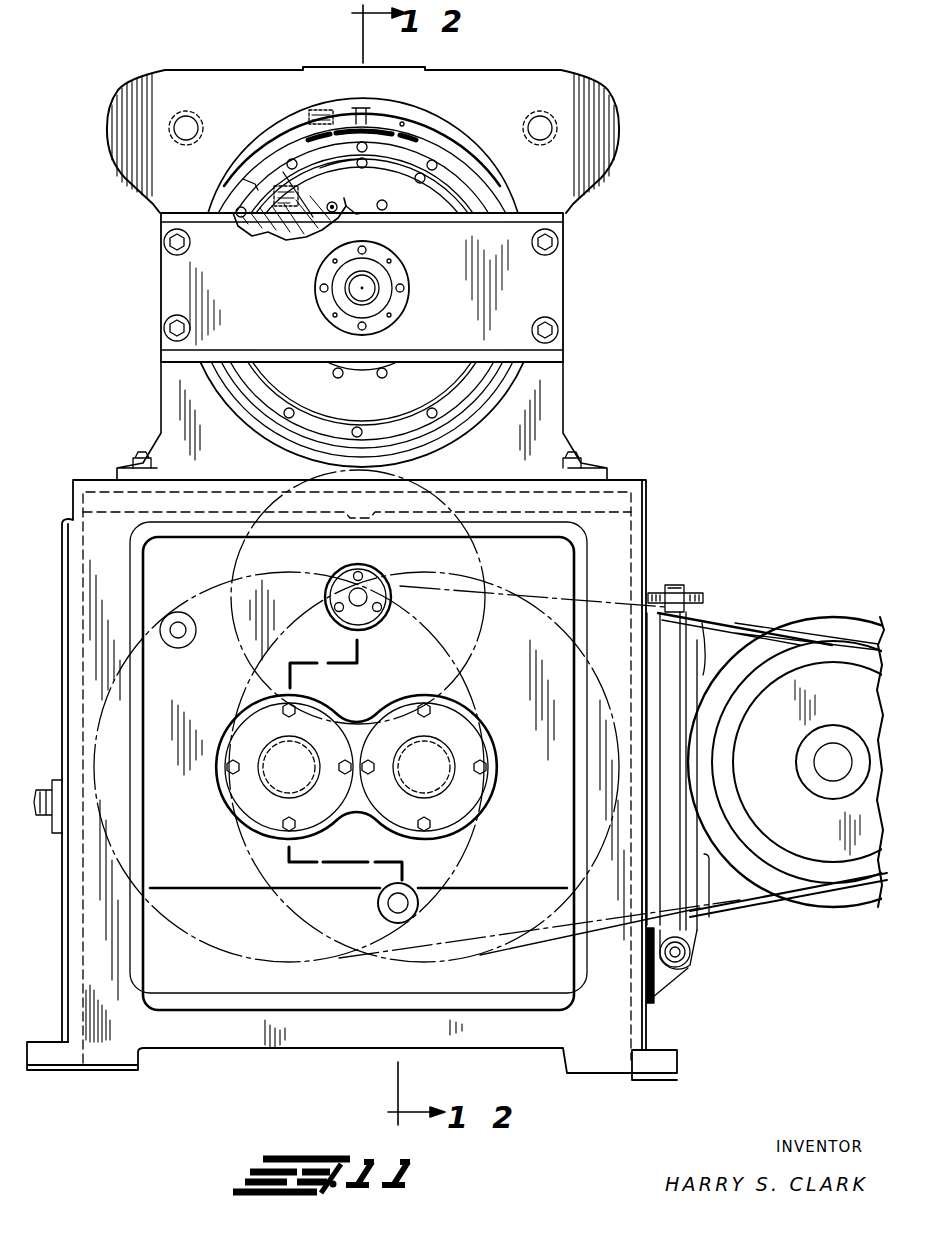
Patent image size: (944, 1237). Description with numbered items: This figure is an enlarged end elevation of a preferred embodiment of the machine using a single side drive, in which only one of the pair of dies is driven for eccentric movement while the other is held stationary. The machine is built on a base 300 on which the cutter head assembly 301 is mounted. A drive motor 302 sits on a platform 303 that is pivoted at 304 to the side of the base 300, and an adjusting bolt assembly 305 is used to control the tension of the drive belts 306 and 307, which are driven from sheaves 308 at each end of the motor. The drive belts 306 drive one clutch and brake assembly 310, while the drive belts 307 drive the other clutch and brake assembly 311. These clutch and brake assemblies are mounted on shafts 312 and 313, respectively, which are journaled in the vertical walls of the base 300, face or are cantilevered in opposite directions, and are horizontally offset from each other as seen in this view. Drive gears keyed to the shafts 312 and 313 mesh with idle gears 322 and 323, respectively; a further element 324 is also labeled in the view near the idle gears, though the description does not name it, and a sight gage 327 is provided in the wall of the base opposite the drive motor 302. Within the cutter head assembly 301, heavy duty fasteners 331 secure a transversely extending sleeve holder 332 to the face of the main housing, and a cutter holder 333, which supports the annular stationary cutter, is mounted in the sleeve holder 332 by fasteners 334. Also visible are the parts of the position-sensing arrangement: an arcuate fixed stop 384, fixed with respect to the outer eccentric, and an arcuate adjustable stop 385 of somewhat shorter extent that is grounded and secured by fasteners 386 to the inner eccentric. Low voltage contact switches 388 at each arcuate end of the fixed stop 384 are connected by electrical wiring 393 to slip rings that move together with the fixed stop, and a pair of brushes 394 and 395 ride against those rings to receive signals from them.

The base 300 is at (660, 518).
The cutter head assembly 301 is at (575, 266).
The drive motor 302 is at (843, 900).
The platform 303 is at (677, 808).
The pivot 304 is at (680, 966).
The adjusting bolt assembly 305 is at (690, 592).
The drive belts 306 is at (560, 586).
The drive belts 307 is at (497, 600).
The sheaves 308 is at (807, 853).
The clutch and brake assembly 310 is at (232, 962).
The clutch and brake assembly 311 is at (438, 963).
The shaft 312 is at (443, 793).
The shaft 313 is at (268, 797).
The idle gear 322 is at (185, 598).
The idle gear 323 is at (206, 548).
The upper shaft bearing 324 is at (358, 597).
The sight gage 327 is at (40, 812).
The heavy duty fasteners 331 is at (556, 336).
The sleeve holder 332 is at (550, 292).
The cutter holder 333 is at (400, 262).
The fasteners 334 is at (400, 304).
The fixed stop 384 is at (270, 232).
The adjustable stop 385 is at (333, 171).
The fasteners 386 is at (336, 210).
The low voltage contact switch 388 is at (283, 172).
The electrical wiring 393 is at (245, 180).
The brush 394 is at (333, 110).
The brush 395 is at (403, 124).